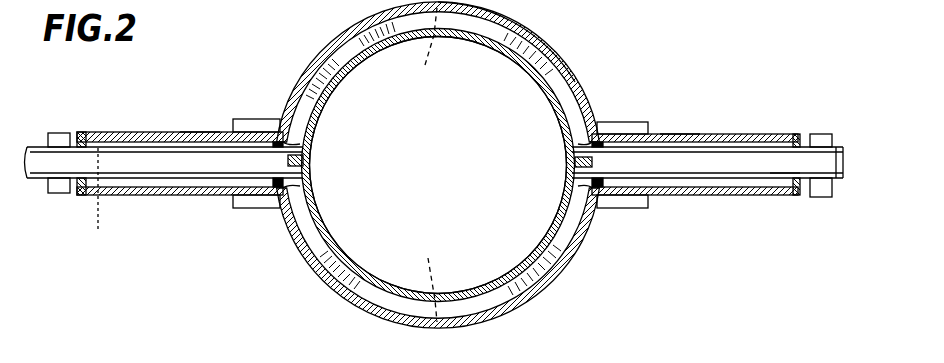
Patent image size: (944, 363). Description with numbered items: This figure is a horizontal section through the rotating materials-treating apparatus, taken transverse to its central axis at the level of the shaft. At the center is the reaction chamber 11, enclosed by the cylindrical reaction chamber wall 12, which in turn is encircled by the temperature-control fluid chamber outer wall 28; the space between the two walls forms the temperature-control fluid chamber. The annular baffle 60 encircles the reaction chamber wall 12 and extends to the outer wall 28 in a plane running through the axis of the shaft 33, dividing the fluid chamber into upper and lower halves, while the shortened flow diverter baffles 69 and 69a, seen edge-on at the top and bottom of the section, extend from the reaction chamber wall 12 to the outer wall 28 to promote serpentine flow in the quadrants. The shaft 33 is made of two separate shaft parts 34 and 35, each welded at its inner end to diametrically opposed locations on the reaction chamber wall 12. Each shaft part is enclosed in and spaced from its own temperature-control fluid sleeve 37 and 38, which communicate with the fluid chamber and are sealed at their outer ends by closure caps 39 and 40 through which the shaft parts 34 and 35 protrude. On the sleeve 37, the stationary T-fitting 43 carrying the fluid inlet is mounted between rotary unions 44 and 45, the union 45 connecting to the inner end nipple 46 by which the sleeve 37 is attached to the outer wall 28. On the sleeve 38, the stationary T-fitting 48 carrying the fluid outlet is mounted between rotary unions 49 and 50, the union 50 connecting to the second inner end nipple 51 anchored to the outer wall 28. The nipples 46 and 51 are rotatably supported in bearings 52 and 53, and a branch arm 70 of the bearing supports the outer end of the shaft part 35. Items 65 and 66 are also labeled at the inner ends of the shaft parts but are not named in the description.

The reaction chamber 11 is at (453, 135).
The reaction chamber wall 12 is at (553, 72).
The temperature-control fluid chamber outer wall 28 is at (603, 72).
The shaft 33 is at (850, 174).
The shaft part 34 is at (783, 170).
The shaft part 35 is at (37, 157).
The temperature-control fluid sleeve 37 is at (783, 128).
The temperature-control fluid sleeve 38 is at (106, 131).
The closure cap 39 is at (800, 135).
The closure cap 40 is at (83, 131).
The stationary T-fitting 43 is at (710, 195).
The rotary union 44 is at (740, 134).
The rotary union 45 is at (683, 134).
The inner end nipple 46 is at (628, 122).
The stationary T-fitting 48 is at (160, 195).
The rotary union 49 is at (136, 132).
The rotary union 50 is at (195, 132).
The second inner end nipple 51 is at (265, 119).
The bearing 52 is at (617, 208).
The bearing 53 is at (250, 208).
The annular baffle 60 is at (502, 33).
The seal 65 is at (575, 162).
The seal 66 is at (305, 160).
The flow diverter baffle 69 is at (425, 49).
The flow diverter baffle 69a is at (427, 281).
The branch arm 70 is at (50, 195).